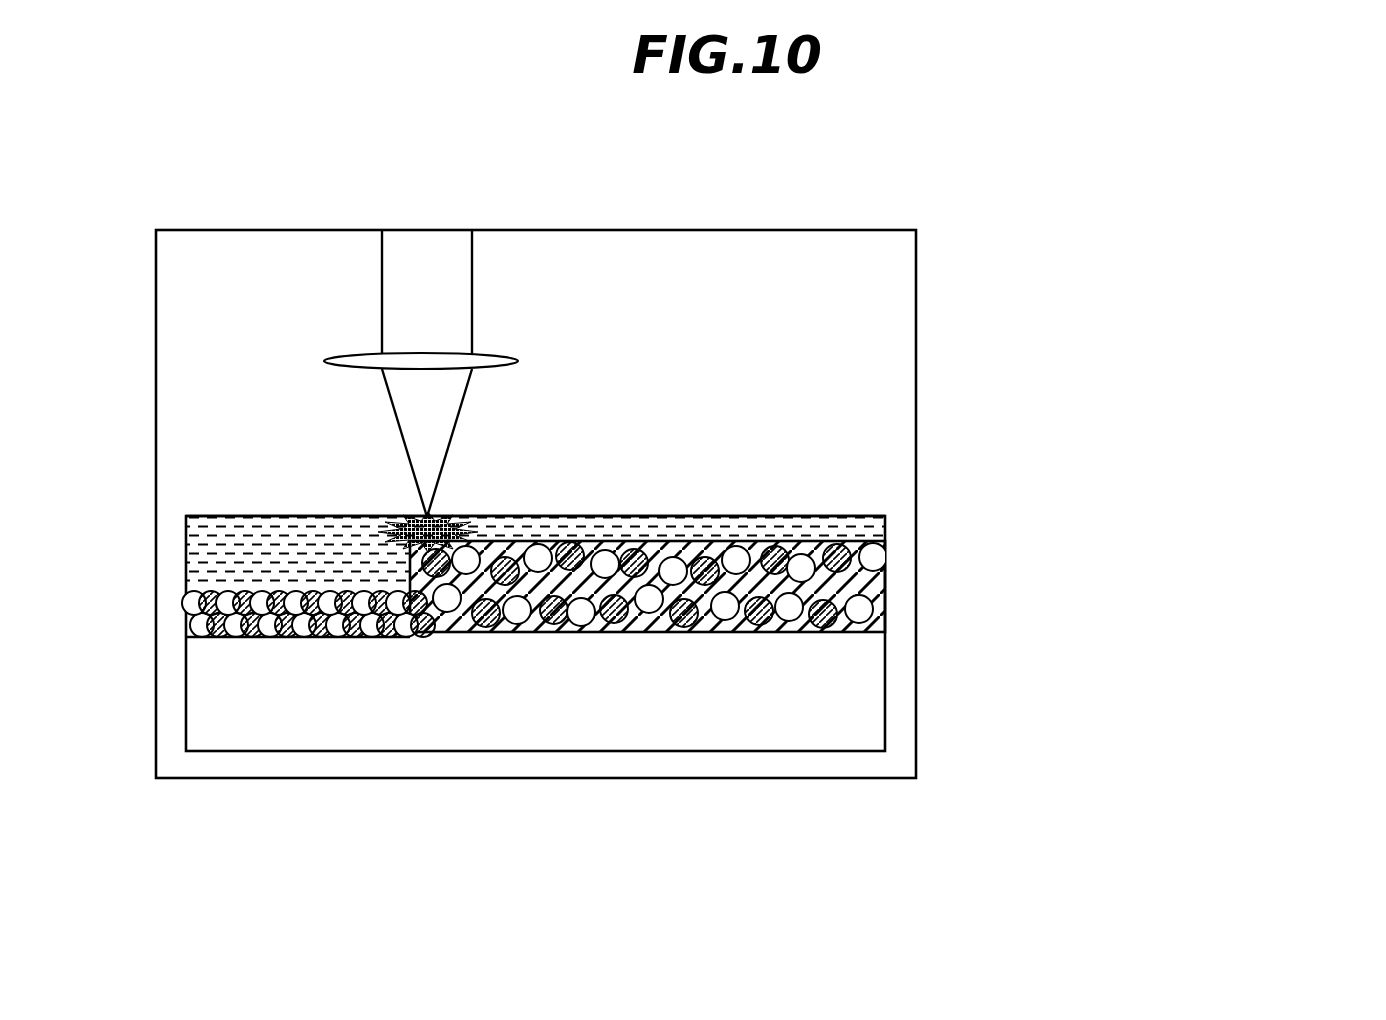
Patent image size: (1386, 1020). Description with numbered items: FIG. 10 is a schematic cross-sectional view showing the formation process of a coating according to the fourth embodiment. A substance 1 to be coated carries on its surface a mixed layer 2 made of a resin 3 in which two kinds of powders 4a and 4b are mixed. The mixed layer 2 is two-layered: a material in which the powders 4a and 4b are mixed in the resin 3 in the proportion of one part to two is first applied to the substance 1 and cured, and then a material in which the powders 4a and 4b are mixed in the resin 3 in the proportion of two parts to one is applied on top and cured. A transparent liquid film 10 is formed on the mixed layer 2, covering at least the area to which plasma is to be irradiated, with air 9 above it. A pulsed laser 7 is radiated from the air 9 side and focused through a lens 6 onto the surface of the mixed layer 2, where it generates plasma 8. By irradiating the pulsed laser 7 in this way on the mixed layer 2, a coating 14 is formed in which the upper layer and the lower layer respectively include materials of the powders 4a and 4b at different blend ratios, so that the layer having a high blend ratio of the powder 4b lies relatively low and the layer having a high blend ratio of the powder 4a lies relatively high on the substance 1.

The substance 1 is at (873, 708).
The mixed layer 2 is at (764, 590).
The resin 3 is at (880, 577).
The powder 4a is at (953, 502).
The powder 4b is at (802, 618).
The lens 6 is at (516, 359).
The pulsed laser 7 is at (450, 446).
The plasma 8 is at (470, 525).
The air 9 is at (903, 241).
The transparent liquid film 10 is at (830, 518).
The coating 14 is at (178, 638).